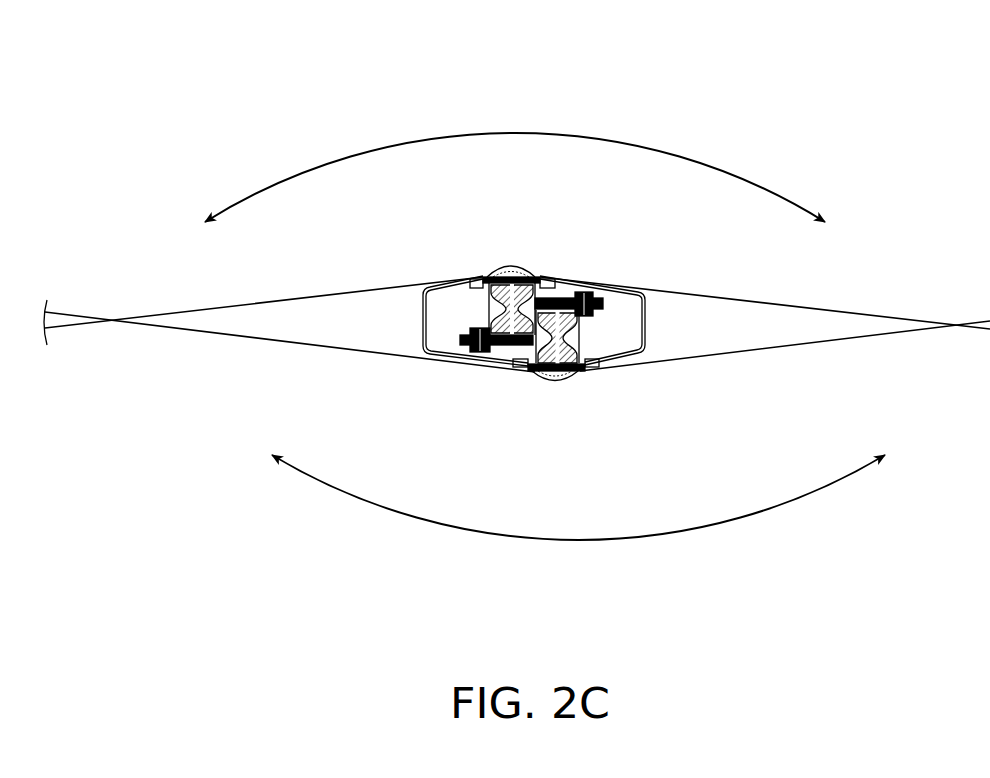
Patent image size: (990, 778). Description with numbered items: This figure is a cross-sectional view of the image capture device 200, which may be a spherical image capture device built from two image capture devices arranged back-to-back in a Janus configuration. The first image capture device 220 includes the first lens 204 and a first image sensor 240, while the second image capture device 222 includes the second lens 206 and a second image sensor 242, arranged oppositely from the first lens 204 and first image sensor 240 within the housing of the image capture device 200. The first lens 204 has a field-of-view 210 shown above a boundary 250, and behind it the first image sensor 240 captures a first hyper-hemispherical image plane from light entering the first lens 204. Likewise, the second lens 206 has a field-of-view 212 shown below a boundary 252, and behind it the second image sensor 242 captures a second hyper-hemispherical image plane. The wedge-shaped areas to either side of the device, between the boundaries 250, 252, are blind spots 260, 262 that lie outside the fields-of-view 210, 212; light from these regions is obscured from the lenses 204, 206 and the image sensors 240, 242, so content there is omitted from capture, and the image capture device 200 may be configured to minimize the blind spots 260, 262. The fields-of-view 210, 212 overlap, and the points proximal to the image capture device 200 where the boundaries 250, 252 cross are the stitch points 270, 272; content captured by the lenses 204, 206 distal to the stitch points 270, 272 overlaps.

The image capture device 200 is at (425, 333).
The first lens 204 is at (511, 267).
The second lens 206 is at (558, 380).
The field-of-view 210 is at (567, 135).
The field-of-view 212 is at (577, 542).
The first image capture device 220 is at (488, 277).
The second image capture device 222 is at (580, 368).
The first image sensor 240 is at (515, 346).
The second image sensor 242 is at (566, 300).
The boundary 250 is at (272, 298).
The boundary 252 is at (302, 345).
The blind spot 260 is at (354, 320).
The blind spot 262 is at (702, 322).
The stitch point 270 is at (110, 322).
The stitch point 272 is at (955, 327).